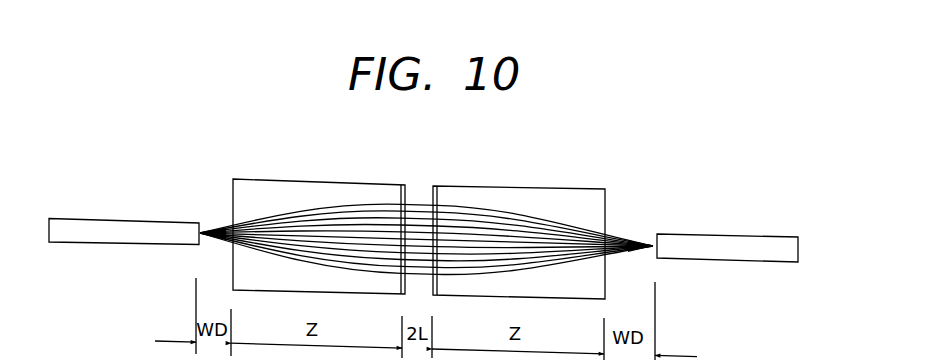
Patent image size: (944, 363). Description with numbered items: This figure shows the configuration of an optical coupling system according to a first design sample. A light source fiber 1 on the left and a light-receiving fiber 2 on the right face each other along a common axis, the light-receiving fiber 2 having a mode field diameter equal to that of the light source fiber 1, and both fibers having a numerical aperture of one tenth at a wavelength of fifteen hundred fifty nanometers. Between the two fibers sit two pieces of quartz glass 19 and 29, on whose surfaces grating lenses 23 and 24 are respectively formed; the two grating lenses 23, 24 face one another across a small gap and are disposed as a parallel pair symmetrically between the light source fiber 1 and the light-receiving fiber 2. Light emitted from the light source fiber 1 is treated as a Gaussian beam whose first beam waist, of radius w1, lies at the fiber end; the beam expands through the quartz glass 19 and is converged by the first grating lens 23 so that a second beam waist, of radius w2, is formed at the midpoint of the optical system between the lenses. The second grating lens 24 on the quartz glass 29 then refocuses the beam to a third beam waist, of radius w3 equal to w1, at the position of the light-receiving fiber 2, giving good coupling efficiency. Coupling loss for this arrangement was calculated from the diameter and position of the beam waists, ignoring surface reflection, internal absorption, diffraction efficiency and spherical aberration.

The light source fiber 1 is at (120, 230).
The light-receiving fiber 2 is at (710, 249).
The piece of quartz glass 19 is at (266, 200).
The piece of quartz glass 29 is at (575, 203).
The grating lens 23 is at (402, 190).
The grating lens 24 is at (440, 188).
The radius of first beam waist w1 is at (203, 220).
The radius of second beam waist w2 is at (421, 202).
The radius of third beam waist w3 is at (652, 232).